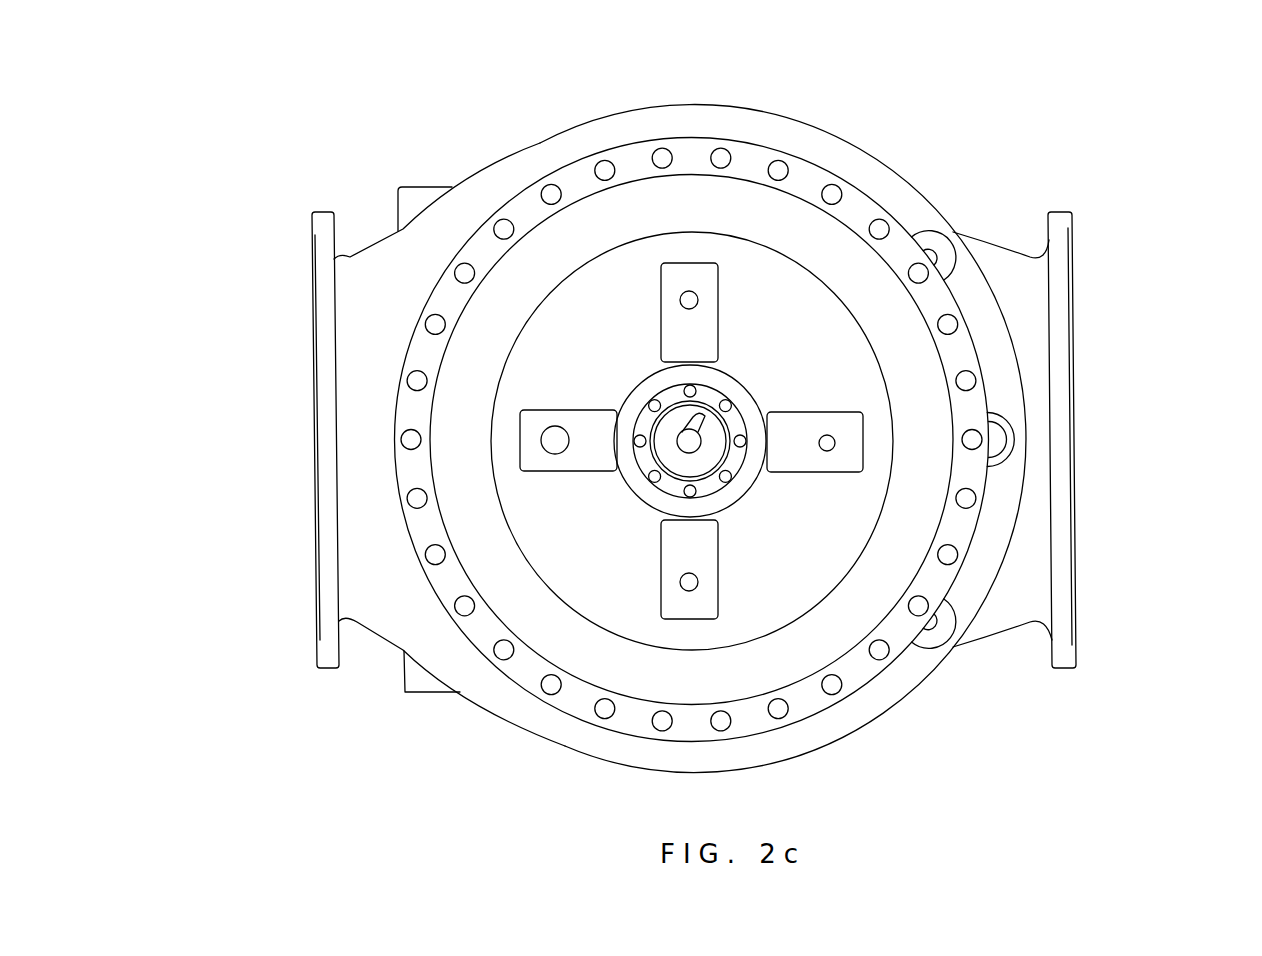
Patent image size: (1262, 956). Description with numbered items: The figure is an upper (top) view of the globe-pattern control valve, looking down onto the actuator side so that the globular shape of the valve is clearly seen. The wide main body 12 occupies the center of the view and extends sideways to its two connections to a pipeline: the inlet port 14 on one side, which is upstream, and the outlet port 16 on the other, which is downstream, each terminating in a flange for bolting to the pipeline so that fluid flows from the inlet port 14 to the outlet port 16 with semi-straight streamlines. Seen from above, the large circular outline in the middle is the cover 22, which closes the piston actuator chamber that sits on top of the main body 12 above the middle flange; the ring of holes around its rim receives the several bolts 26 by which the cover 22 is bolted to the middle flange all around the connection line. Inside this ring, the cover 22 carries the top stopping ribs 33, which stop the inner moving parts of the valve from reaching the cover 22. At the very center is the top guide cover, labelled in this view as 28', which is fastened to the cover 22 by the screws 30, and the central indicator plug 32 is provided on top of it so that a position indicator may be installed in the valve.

The main body 12 is at (695, 758).
The inlet port 14 is at (1083, 443).
The outlet port 16 is at (310, 440).
The cover 22 is at (810, 357).
The bolts 26 is at (965, 377).
The hub 28' is at (787, 282).
The screws 30 is at (625, 420).
The central indicator plug 32 is at (689, 440).
The top stopping ribs 33 is at (840, 455).